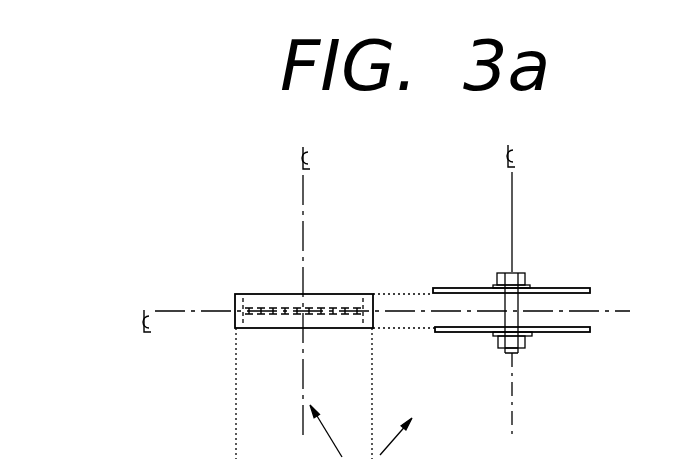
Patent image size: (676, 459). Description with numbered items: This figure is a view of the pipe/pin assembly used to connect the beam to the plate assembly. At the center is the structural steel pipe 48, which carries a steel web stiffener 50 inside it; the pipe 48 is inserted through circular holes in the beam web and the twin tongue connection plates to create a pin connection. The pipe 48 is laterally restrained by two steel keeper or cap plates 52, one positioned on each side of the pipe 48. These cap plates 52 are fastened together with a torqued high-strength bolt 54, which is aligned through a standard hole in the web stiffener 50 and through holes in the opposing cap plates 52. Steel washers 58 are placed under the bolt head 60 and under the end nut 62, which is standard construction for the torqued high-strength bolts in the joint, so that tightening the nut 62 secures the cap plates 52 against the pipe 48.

The structural steel pipe 48 is at (240, 335).
The web stiffener 50 is at (256, 298).
The cap plates 52 is at (433, 288).
The high-strength bolt 54 is at (517, 258).
The steel washers 58 is at (530, 285).
The bolt head 60 is at (517, 272).
The end nut 62 is at (498, 342).